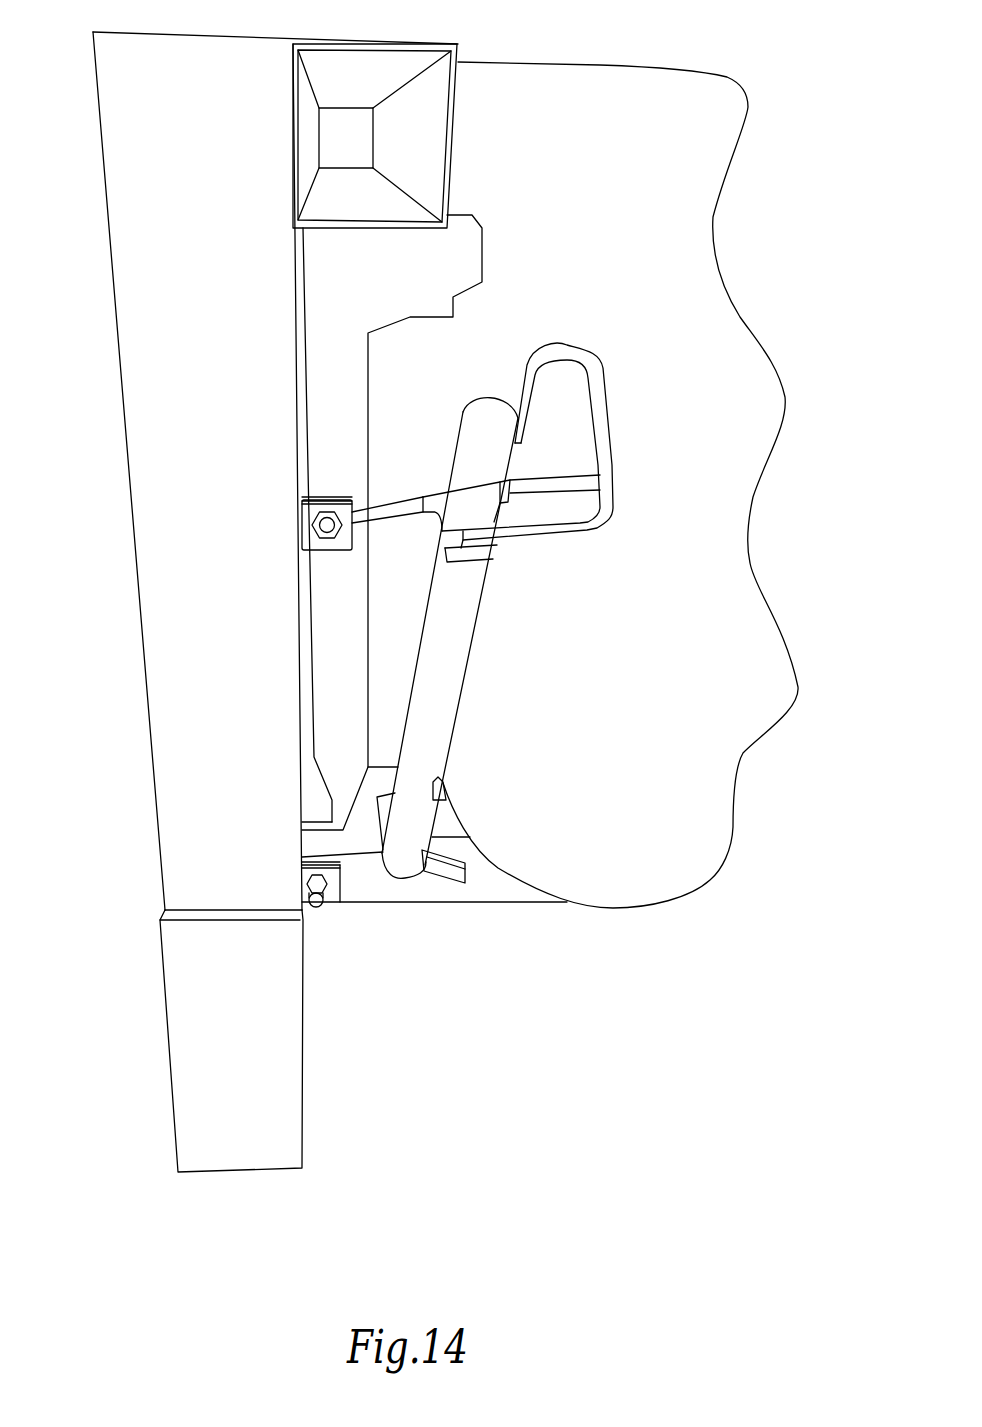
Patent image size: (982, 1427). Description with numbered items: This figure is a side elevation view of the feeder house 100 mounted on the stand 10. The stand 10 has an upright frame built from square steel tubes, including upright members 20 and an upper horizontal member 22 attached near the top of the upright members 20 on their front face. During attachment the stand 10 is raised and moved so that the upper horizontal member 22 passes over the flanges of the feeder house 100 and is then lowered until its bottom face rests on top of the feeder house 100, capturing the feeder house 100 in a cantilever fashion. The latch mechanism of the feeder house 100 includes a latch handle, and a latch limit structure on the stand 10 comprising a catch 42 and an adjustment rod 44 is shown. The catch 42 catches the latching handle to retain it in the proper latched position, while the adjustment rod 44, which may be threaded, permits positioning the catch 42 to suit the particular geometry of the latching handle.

The stand 10 is at (118, 738).
The upright members 20 is at (122, 193).
The upper horizontal member 22 is at (431, 44).
The catch 42 is at (452, 505).
The adjustment rod 44 is at (563, 482).
The feeder house 100 is at (710, 342).